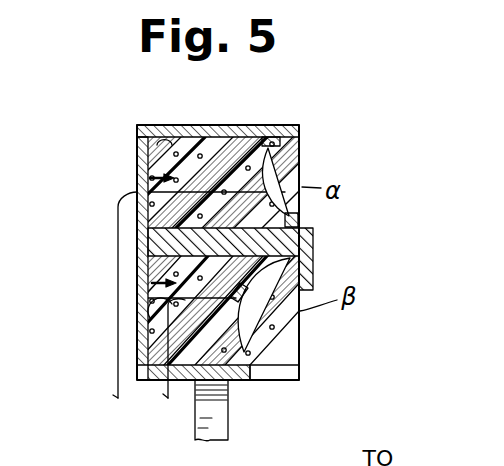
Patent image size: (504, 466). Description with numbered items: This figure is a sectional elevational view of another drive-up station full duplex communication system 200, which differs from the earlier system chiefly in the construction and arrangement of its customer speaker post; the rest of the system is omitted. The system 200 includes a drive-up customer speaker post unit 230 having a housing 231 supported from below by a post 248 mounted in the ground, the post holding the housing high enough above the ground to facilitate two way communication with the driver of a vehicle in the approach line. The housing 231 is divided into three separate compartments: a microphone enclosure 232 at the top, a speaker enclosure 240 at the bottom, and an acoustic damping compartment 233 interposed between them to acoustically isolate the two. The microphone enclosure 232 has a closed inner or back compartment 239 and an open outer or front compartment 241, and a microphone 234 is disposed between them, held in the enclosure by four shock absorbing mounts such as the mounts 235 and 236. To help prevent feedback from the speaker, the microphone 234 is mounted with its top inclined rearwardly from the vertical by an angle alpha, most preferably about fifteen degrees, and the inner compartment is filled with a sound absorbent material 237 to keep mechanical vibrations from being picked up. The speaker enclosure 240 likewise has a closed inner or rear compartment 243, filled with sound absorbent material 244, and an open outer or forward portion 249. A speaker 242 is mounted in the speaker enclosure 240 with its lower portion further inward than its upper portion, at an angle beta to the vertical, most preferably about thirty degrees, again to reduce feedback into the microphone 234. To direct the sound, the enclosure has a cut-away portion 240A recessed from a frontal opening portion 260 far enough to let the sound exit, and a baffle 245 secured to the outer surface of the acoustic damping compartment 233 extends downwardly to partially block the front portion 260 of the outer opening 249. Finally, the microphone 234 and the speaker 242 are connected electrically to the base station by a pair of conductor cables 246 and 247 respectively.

The drive-up station full duplex communication system 200 is at (432, 113).
The drive-up customer speaker post unit 230 is at (357, 147).
The housing 231 is at (137, 153).
The microphone enclosure 232 is at (326, 166).
The acoustic damping compartment 233 is at (313, 241).
The microphone 234 is at (280, 168).
The shock absorbing mount 235 is at (273, 127).
The shock absorbing mount 236 is at (300, 222).
The sound absorbent material 237 is at (145, 178).
The back compartment 239 is at (160, 142).
The speaker enclosure 240 is at (357, 259).
The cut-away portion 240A is at (280, 380).
The front compartment 241 is at (300, 148).
The speaker 242 is at (283, 338).
The rear compartment 243 is at (148, 312).
The sound absorbent material 244 is at (148, 283).
The baffle 245 is at (313, 280).
The conductor cable 246 is at (118, 328).
The conductor cable 247 is at (164, 393).
The post 248 is at (195, 417).
The forward portion 249 is at (265, 331).
The frontal opening portion 260 is at (300, 362).